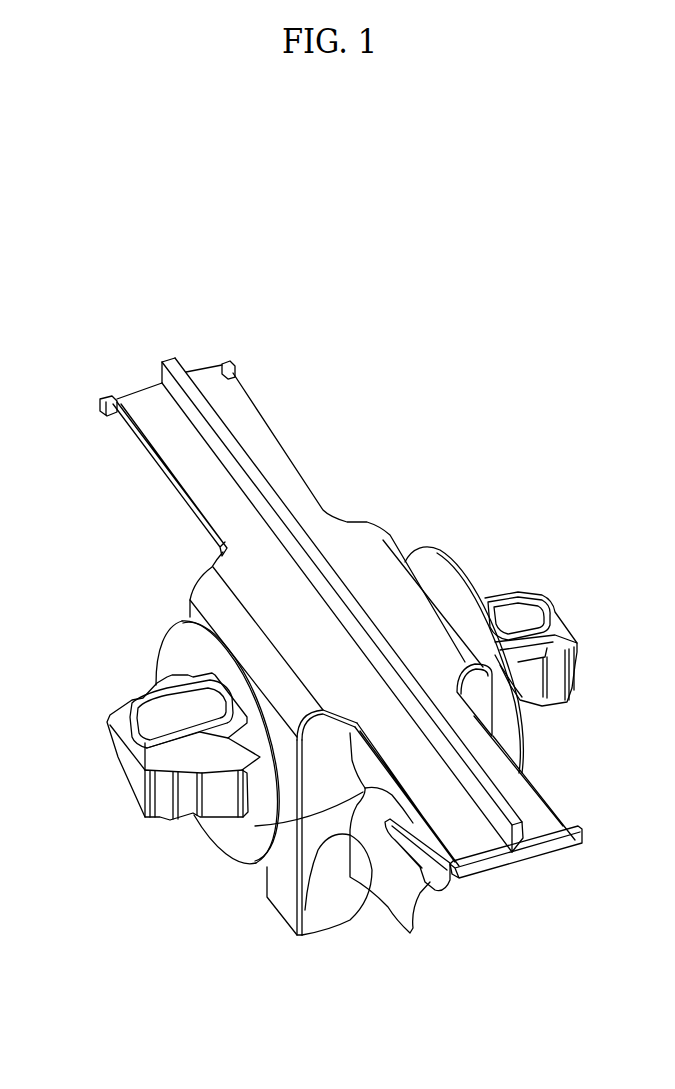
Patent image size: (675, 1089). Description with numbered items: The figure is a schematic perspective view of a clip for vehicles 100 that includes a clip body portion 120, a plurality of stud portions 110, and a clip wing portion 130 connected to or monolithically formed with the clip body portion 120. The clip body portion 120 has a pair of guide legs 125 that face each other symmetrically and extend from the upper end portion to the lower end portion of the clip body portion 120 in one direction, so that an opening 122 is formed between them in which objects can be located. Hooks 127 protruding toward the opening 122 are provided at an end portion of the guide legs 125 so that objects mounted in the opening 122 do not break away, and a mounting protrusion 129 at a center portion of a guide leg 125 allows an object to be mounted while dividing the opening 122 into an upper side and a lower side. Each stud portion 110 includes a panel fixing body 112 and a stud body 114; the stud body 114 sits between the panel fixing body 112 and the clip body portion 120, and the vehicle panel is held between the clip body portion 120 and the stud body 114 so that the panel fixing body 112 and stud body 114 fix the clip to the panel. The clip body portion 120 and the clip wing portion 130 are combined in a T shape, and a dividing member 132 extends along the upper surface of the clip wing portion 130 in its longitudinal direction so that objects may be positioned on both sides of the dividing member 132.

The clip for vehicles 100 is at (326, 261).
The stud portions 110 is at (120, 695).
The panel fixing body 112 is at (130, 773).
The stud body 114 is at (445, 551).
The clip body portion 120 is at (258, 900).
The opening 122 is at (293, 927).
The guide legs 125 is at (320, 920).
The hooks 127 is at (423, 877).
The mounting protrusion 129 is at (267, 823).
The clip wing portion 130 is at (547, 828).
The dividing member 132 is at (527, 850).